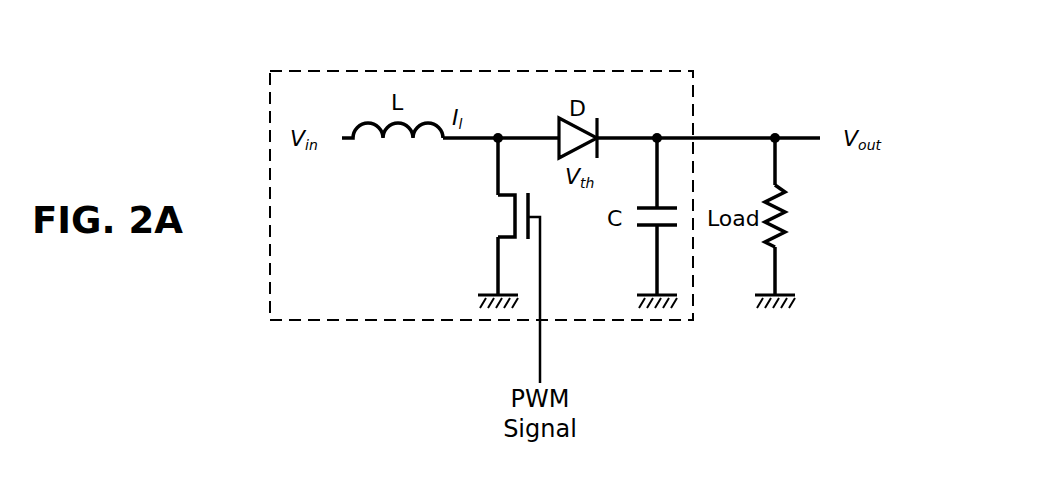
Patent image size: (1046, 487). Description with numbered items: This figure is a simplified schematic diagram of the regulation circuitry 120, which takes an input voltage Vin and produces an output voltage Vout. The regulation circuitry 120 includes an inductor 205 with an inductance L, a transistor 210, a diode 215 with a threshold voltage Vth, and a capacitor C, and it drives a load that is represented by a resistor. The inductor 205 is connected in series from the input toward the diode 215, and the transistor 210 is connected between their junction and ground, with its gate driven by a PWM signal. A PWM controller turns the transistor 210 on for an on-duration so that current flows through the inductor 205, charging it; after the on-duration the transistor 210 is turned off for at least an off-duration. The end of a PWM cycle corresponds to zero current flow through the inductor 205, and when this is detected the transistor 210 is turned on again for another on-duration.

The regulation circuitry 120 is at (608, 70).
The inductor 205 is at (384, 148).
The transistor 210 is at (534, 212).
The diode 215 is at (598, 133).